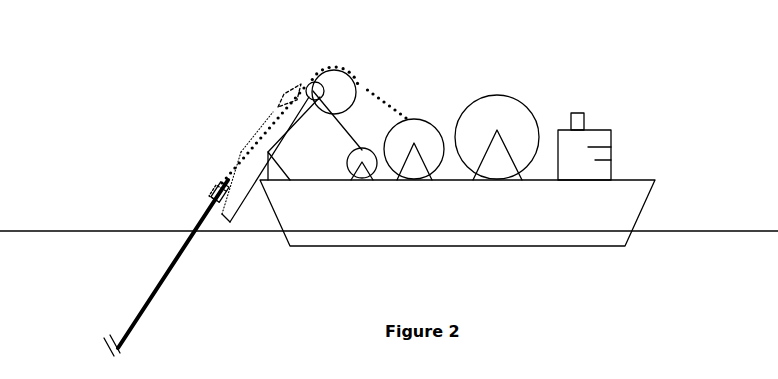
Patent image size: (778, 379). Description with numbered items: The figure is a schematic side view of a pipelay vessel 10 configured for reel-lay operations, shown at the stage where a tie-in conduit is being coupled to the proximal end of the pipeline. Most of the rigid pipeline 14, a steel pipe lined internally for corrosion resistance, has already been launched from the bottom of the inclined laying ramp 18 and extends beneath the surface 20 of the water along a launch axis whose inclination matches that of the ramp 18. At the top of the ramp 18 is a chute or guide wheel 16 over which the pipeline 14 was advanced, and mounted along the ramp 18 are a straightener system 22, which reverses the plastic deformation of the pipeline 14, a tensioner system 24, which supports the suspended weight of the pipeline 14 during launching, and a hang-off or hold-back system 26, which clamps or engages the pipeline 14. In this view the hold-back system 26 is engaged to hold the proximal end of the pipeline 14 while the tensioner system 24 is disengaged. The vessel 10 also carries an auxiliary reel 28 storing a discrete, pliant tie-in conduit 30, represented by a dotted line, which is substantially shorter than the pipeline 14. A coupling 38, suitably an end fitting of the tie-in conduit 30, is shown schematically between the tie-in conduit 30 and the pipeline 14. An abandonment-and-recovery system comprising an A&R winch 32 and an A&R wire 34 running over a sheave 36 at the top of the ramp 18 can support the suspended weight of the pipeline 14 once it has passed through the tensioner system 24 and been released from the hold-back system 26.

The pipelay vessel 10 is at (655, 116).
The rigid pipeline 14 is at (152, 303).
The guide wheel 16 is at (331, 84).
The laying ramp 18 is at (231, 221).
The surface 20 is at (49, 229).
The straightener system 22 is at (280, 93).
The tensioner system 24 is at (243, 149).
The hold-back system 26 is at (212, 197).
The auxiliary reel 28 is at (422, 135).
The tie-in conduit 30 is at (366, 85).
The A&R winch 32 is at (361, 155).
The A&R wire 34 is at (338, 121).
The sheave 36 is at (312, 88).
The coupling 38 is at (221, 184).